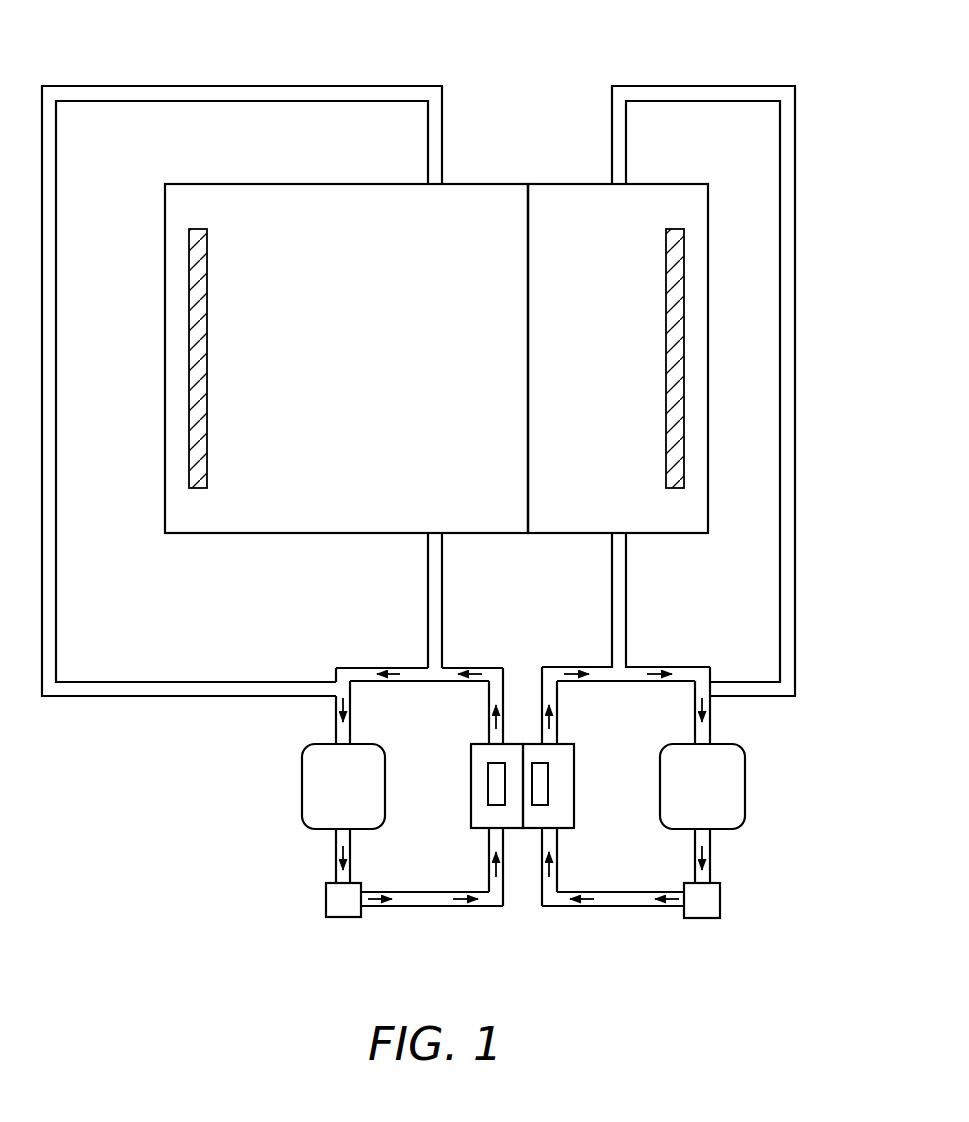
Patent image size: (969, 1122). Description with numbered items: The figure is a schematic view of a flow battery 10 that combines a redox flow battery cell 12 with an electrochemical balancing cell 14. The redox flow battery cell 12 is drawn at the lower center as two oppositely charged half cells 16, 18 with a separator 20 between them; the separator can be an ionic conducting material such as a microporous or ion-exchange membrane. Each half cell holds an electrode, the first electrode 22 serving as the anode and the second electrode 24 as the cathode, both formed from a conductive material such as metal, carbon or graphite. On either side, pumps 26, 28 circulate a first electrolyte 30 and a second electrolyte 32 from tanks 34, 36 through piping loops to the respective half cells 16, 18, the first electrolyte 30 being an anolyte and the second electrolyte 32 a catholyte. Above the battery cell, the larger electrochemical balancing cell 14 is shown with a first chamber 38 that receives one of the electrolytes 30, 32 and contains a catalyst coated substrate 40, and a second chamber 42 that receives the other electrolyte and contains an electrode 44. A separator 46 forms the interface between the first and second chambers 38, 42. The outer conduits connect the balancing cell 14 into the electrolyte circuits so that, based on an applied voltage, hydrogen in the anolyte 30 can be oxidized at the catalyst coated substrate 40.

The flow battery 10 is at (200, 962).
The redox flow battery cell 12 is at (815, 728).
The electrochemical balancing cell 14 is at (820, 50).
The half cell 16 is at (481, 761).
The half cell 18 is at (571, 758).
The separator 20 is at (522, 760).
The first electrode 22 is at (490, 788).
The second electrode 24 is at (548, 785).
The pump 26 is at (326, 898).
The pump 28 is at (720, 898).
The first electrolyte 30 is at (435, 895).
The second electrolyte 32 is at (622, 895).
The tank 34 is at (302, 780).
The tank 36 is at (745, 785).
The first chamber 38 is at (313, 226).
The catalyst coated substrate 40 is at (189, 306).
The second chamber 42 is at (647, 226).
The electrode 44 is at (685, 290).
The separator 46 is at (529, 268).